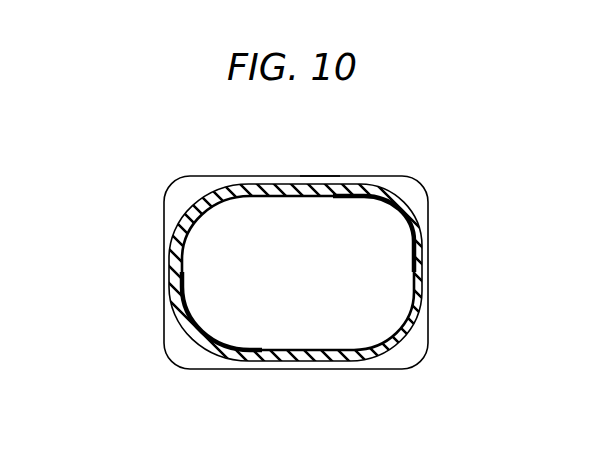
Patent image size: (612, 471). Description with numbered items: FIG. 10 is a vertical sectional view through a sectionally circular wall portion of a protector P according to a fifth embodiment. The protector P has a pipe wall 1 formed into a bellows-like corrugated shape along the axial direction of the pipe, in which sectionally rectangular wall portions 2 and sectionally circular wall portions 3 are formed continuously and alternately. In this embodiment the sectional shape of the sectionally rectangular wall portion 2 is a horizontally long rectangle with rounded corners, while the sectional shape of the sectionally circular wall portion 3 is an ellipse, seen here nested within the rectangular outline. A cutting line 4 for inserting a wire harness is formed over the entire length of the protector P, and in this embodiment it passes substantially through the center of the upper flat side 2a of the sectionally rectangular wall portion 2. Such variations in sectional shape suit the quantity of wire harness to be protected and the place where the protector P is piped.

The protector P is at (150, 195).
The pipe wall 1 is at (429, 203).
The sectionally rectangular wall portion 2 is at (168, 237).
The flat side 2a is at (320, 175).
The sectionally circular wall portion 3 is at (175, 302).
The cutting line 4 is at (295, 185).